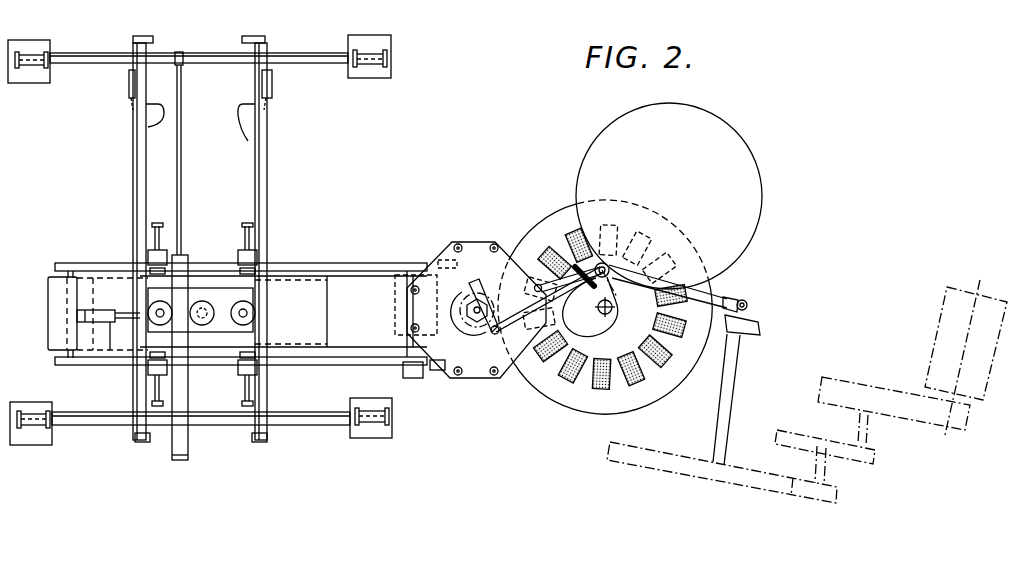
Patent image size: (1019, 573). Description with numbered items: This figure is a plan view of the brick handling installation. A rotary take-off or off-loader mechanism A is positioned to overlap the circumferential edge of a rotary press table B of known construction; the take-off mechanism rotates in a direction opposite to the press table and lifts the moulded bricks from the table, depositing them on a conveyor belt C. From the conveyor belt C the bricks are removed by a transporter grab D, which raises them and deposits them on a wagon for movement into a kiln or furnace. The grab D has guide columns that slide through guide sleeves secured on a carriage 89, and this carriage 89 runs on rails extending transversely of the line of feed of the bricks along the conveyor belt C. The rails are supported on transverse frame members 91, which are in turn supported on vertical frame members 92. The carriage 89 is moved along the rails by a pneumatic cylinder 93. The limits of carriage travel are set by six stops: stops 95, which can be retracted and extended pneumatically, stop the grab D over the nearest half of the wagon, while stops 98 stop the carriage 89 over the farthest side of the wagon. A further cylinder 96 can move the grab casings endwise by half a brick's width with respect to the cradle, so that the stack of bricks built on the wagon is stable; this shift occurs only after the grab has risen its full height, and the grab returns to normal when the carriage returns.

The stops 98 is at (247, 41).
The transverse frame members 91 is at (340, 63).
The vertical frame members 92 is at (362, 435).
The stops 95 is at (143, 122).
The carriage 89 is at (217, 263).
The cylinder 96 is at (110, 340).
The pneumatic cylinder 93 is at (186, 404).
The rotary take-off or off-loader mechanism A is at (480, 378).
The rotary press table B is at (568, 400).
The conveyor belt C is at (330, 263).
The grab D is at (143, 290).